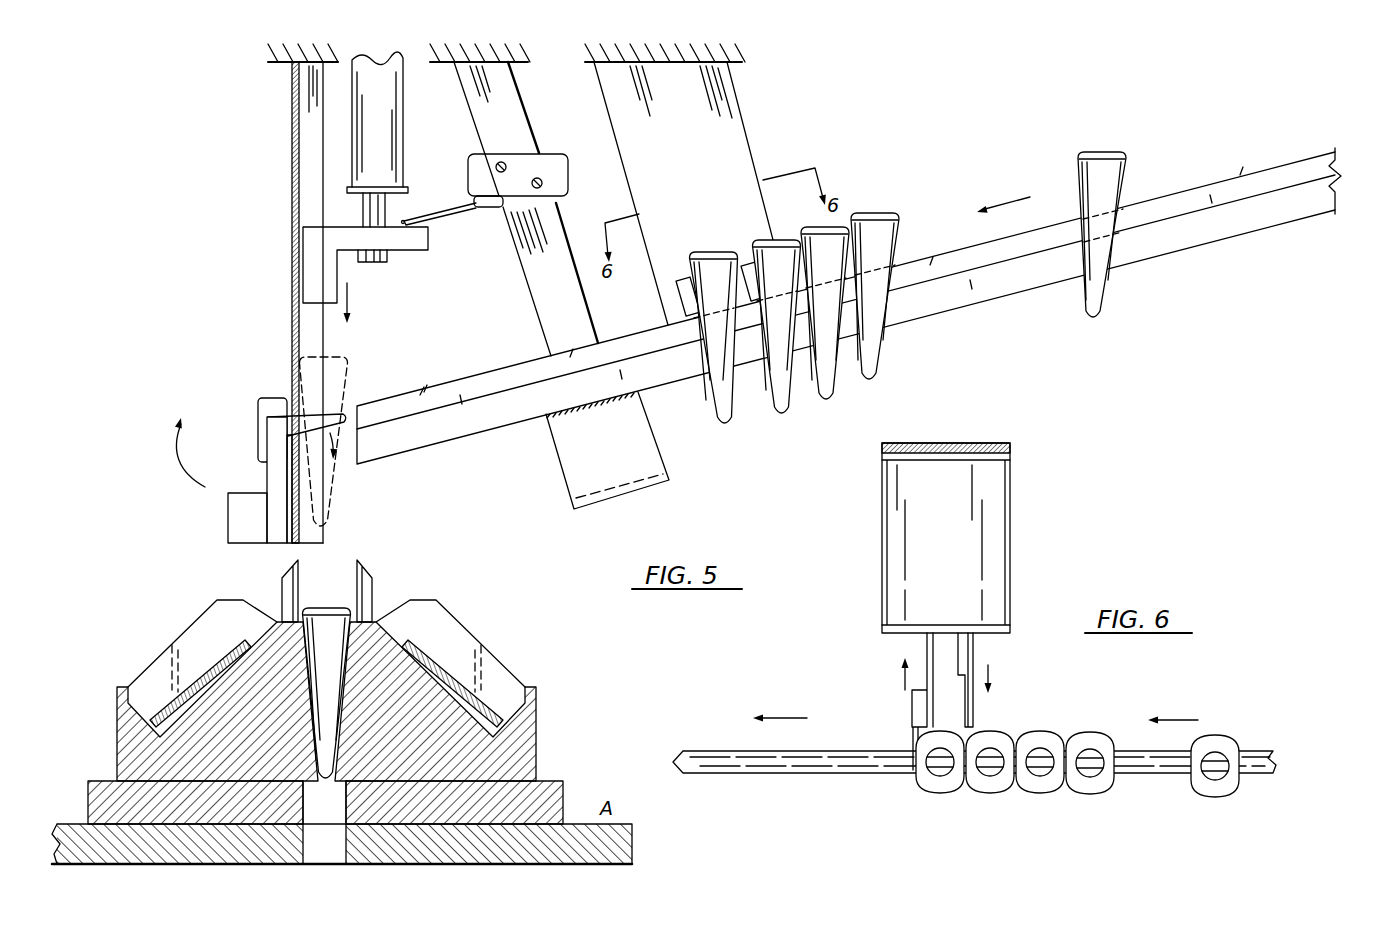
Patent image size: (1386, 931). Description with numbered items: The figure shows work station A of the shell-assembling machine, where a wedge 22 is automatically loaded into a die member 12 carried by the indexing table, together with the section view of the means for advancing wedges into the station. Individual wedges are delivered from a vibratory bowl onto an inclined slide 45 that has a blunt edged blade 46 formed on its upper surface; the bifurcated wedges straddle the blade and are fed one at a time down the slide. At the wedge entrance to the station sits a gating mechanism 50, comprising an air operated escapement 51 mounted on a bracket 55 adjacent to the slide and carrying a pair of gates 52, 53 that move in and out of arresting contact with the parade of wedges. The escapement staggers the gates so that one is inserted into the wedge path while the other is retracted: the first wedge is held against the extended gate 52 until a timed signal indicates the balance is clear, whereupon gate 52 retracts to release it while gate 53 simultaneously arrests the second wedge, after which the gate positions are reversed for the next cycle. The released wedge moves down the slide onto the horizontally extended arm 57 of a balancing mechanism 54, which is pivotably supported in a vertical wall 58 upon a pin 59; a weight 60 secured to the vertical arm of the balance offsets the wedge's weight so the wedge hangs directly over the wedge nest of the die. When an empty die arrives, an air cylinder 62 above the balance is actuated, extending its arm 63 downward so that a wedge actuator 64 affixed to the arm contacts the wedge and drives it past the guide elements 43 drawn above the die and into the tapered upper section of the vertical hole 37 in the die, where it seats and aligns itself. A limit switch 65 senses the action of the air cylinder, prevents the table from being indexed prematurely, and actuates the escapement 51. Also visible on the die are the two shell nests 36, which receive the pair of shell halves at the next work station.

In FIG. 5, the die member 12 is at (347, 751).
In FIG. 5, the wedge 22 is at (1103, 160).
In FIG. 6, the wedge 22 is at (1222, 740).
In FIG. 5, the shell nest 36 is at (327, 689).
In FIG. 5, the vertical hole 37 is at (330, 843).
In FIG. 5, the guide fingers 43 is at (337, 569).
In FIG. 5, the inclined slide 45 is at (1268, 210).
In FIG. 6, the inclined slide 45 is at (1258, 755).
In FIG. 5, the blunt edged blade 46 is at (1218, 184).
In FIG. 5, the gating mechanism 50 is at (678, 263).
In FIG. 6, the gating mechanism 50 is at (998, 538).
In FIG. 6, the air operated escapement 51 is at (997, 565).
In FIG. 6, the gate 52 is at (933, 655).
In FIG. 6, the gate 53 is at (975, 712).
In FIG. 5, the balancing mechanism 54 is at (249, 480).
In FIG. 5, the bracket 55 is at (733, 127).
In FIG. 6, the bracket 55 is at (980, 443).
In FIG. 5, the horizontally extended arm 57 is at (332, 410).
In FIG. 5, the vertical wall 58 is at (292, 277).
In FIG. 5, the pin 59 is at (270, 424).
In FIG. 5, the weight 60 is at (240, 535).
In FIG. 5, the air cylinder 62 is at (383, 111).
In FIG. 5, the arm 63 is at (385, 212).
In FIG. 5, the wedge actuator 64 is at (405, 242).
In FIG. 5, the limit switch 65 is at (546, 162).